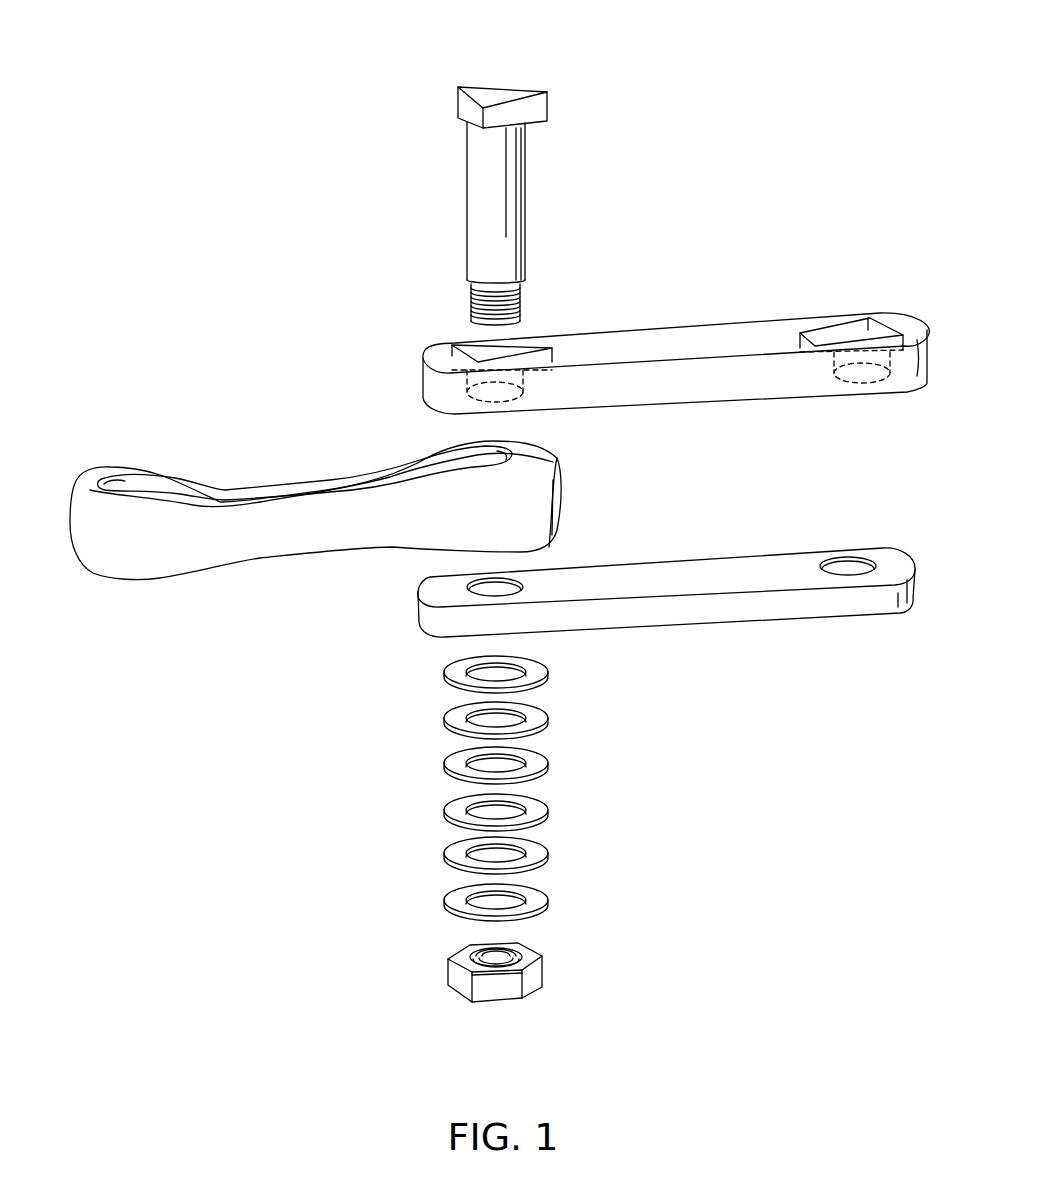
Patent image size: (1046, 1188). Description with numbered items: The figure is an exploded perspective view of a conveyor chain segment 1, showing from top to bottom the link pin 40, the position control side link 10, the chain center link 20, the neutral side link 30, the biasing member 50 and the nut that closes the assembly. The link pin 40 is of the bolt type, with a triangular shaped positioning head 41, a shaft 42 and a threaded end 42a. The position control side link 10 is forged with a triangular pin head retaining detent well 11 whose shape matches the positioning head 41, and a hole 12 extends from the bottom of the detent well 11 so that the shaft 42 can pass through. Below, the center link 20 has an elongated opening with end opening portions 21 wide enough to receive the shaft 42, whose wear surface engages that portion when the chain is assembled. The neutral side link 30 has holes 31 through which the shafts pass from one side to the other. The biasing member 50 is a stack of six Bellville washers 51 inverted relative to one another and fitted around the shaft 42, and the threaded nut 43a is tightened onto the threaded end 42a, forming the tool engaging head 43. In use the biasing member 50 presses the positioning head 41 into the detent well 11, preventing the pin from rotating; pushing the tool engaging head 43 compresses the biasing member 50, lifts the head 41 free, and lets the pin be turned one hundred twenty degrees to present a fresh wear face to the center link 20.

The conveyor chain segment 1 is at (779, 78).
The position control side link 10 is at (668, 318).
The pin head retaining detent well 11 is at (466, 349).
The hole 12 is at (520, 395).
The chain center link 20 is at (324, 556).
The end opening portion 21 is at (131, 483).
The neutral side link 30 is at (695, 552).
The hole 31 is at (507, 588).
The link pin 40 is at (534, 151).
The positioning head 41 is at (505, 91).
The shaft 42 is at (516, 218).
The threaded end 42a is at (521, 303).
The tool engaging head 43 is at (550, 956).
The threaded nut 43a is at (531, 980).
The biasing member 50 is at (560, 659).
The washer 51 is at (443, 897).